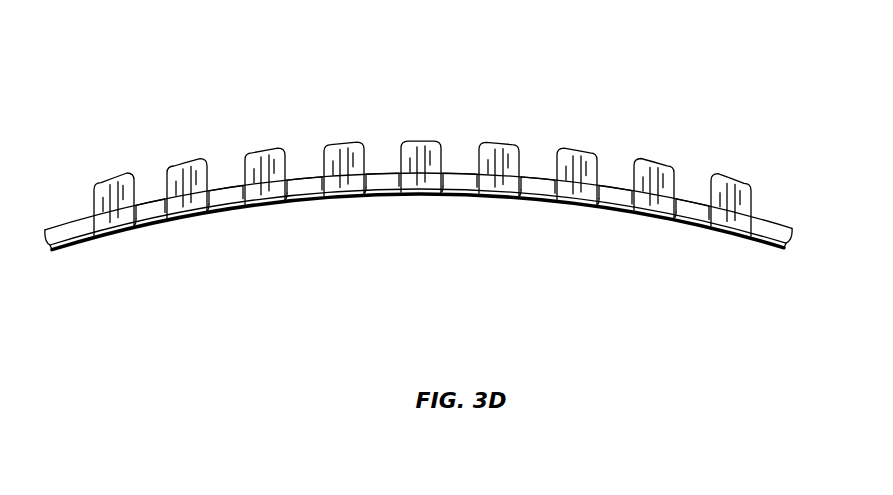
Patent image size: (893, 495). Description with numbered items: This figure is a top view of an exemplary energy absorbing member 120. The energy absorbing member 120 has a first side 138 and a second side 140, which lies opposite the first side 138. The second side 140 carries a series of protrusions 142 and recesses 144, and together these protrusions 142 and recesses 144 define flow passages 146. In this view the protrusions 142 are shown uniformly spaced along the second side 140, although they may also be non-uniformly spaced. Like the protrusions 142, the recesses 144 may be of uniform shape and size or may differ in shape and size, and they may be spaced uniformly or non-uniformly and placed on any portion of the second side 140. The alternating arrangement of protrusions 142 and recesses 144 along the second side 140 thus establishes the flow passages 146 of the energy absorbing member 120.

The energy absorbing member 120 is at (678, 282).
The first side 138 is at (93, 253).
The second side 140 is at (150, 168).
The protrusion 142 is at (351, 172).
The recess 144 is at (385, 162).
The flow passage 146 is at (370, 165).